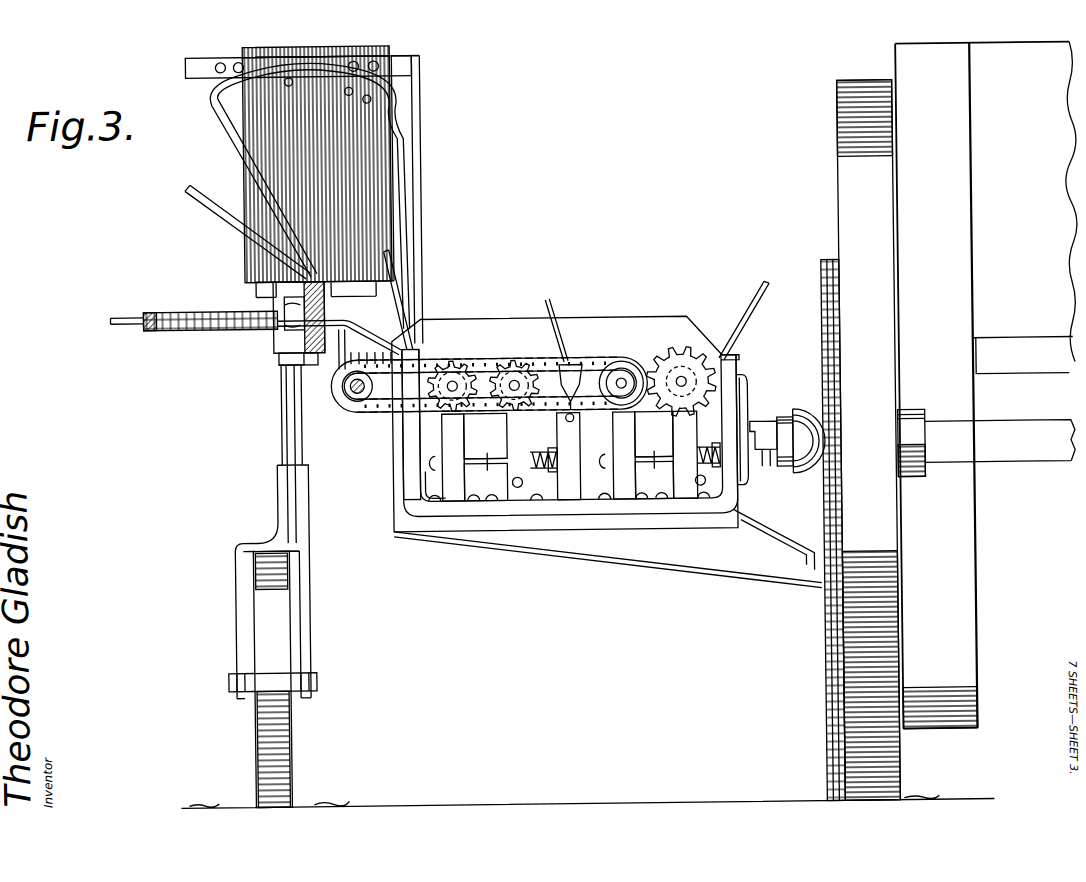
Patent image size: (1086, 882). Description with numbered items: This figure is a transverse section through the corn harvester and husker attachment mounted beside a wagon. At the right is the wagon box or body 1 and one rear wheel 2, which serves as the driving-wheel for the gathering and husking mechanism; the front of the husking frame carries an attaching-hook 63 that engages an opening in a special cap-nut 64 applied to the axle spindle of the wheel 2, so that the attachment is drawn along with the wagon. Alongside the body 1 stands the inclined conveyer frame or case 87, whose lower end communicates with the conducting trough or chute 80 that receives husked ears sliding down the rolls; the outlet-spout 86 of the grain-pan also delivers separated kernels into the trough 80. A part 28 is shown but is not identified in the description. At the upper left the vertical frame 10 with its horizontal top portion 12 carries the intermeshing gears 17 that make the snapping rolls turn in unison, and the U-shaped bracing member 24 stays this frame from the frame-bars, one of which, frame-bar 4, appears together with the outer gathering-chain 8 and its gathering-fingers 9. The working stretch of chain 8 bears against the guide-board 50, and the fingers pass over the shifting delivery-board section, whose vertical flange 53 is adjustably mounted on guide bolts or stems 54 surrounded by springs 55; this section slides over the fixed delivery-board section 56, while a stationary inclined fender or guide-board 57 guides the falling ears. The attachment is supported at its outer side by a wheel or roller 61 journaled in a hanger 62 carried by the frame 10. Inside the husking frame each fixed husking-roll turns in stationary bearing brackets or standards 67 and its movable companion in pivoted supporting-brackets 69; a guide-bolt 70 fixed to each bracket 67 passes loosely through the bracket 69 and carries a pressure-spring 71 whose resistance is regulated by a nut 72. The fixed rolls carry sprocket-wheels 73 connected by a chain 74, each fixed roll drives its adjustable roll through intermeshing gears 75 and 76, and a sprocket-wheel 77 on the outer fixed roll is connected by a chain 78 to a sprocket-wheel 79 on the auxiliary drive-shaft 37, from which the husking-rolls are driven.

The wagon box or body 1 is at (1003, 86).
The rear wheel 2 is at (859, 89).
The frame-bar 4 is at (275, 342).
The gathering-chain 8 is at (152, 308).
The gathering-fingers 9 is at (114, 318).
The vertical frame 10 is at (425, 158).
The horizontal top portion 12 is at (190, 64).
The intermeshing gears 17 is at (373, 46).
The U-shaped bracing member 24 is at (409, 127).
The chain 28 is at (815, 265).
The auxiliary drive-shaft 37 is at (352, 400).
The guide-board 50 is at (286, 300).
The vertical flange 53 is at (282, 360).
The guide bolts or stems 54 is at (340, 352).
The springs 55 is at (380, 338).
The fixed delivery-board section 56 is at (428, 298).
The stationary inclined fender or guide-board 57 is at (223, 207).
The wheel or roller 61 is at (255, 582).
The hanger 62 is at (242, 515).
The attaching-hook 63 is at (780, 420).
The cap-nut 64 is at (768, 470).
The stationary bearing brackets or standards 67 is at (612, 528).
The pivoted supporting-brackets 69 is at (673, 435).
The guide-bolt 70 is at (569, 475).
The pressure-spring 71 is at (412, 487).
The nut 72 is at (685, 540).
The sprocket-wheels 73 is at (598, 362).
The chain 74 is at (540, 360).
The gear 75 is at (660, 362).
The gear 76 is at (735, 360).
The sprocket-wheel 77 is at (412, 440).
The chain 78 is at (420, 358).
The sprocket-wheel 79 is at (368, 412).
The conducting trough or chute 80 is at (640, 562).
The outlet-spout 86 is at (760, 558).
The inclined conveyer frame or case 87 is at (985, 385).